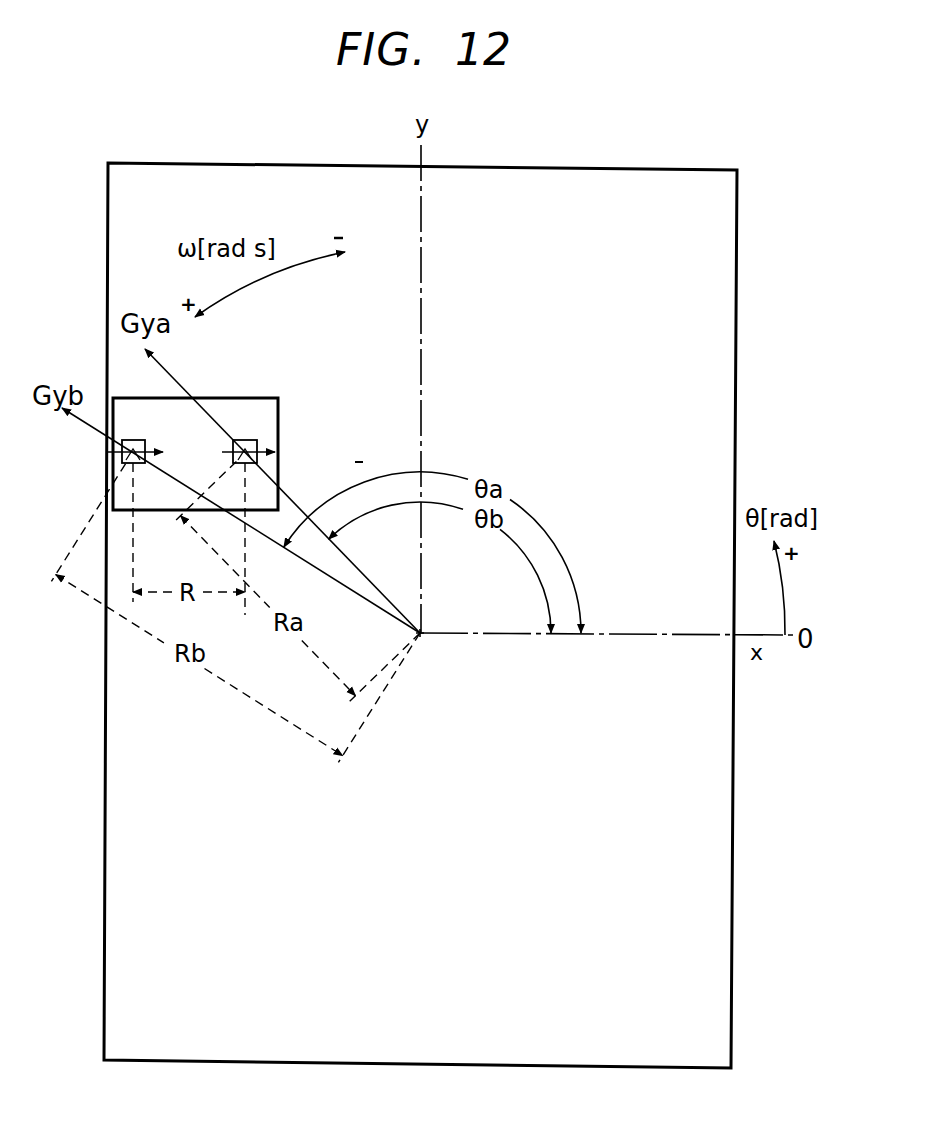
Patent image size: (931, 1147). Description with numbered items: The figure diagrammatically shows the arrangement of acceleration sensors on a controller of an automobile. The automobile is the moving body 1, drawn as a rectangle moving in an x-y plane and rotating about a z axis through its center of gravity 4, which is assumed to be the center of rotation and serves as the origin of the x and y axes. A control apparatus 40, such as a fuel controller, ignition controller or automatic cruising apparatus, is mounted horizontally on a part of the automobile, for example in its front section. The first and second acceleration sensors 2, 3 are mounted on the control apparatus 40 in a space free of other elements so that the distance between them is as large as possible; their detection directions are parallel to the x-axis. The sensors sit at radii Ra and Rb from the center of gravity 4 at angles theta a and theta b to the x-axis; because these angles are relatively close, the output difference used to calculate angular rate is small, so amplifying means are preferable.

The moving body 1 is at (718, 168).
The first acceleration sensor 2 is at (241, 440).
The second acceleration sensor 3 is at (141, 440).
The center of gravity 4 is at (421, 636).
The control apparatus 40 is at (271, 399).